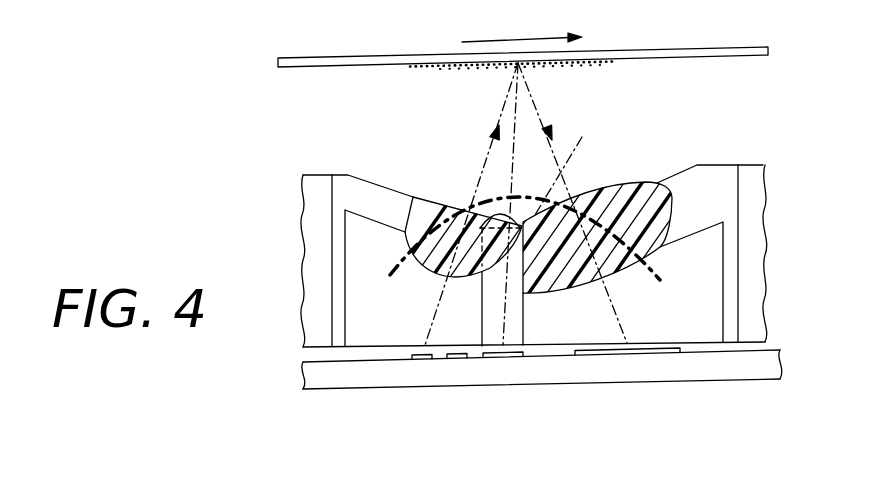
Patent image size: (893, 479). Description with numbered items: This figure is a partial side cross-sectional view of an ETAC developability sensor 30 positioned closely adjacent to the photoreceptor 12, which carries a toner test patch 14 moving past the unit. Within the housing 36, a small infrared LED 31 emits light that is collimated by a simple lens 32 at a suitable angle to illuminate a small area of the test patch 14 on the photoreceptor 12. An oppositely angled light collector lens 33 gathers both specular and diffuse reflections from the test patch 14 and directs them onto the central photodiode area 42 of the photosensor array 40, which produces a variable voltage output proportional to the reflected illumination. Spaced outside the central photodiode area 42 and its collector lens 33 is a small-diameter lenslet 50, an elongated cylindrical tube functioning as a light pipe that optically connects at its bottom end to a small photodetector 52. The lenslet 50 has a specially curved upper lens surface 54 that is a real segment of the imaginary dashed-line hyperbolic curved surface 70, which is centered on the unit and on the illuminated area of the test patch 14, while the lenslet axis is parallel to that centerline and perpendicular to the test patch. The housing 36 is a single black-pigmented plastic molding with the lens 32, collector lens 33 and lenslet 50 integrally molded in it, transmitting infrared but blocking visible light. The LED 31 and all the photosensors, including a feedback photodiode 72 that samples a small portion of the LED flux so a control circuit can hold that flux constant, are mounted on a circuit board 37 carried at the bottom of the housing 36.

The photoreceptor 12 is at (715, 48).
The test patch 14 is at (563, 62).
The ETAC developability sensor 30 is at (541, 271).
The LED 31 is at (415, 361).
The lens 32 is at (443, 205).
The light collector lens 33 is at (615, 207).
The housing 36 is at (372, 188).
The circuit board 37 is at (725, 370).
The photosensor array 40 is at (541, 402).
The central photodiode area 42 is at (615, 354).
The lenslet 50 is at (490, 338).
The photodetector 52 is at (498, 358).
The upper lens surface 54 is at (502, 218).
The hyperbolic curved surface 70 is at (526, 204).
The feedback photodiode 72 is at (452, 361).